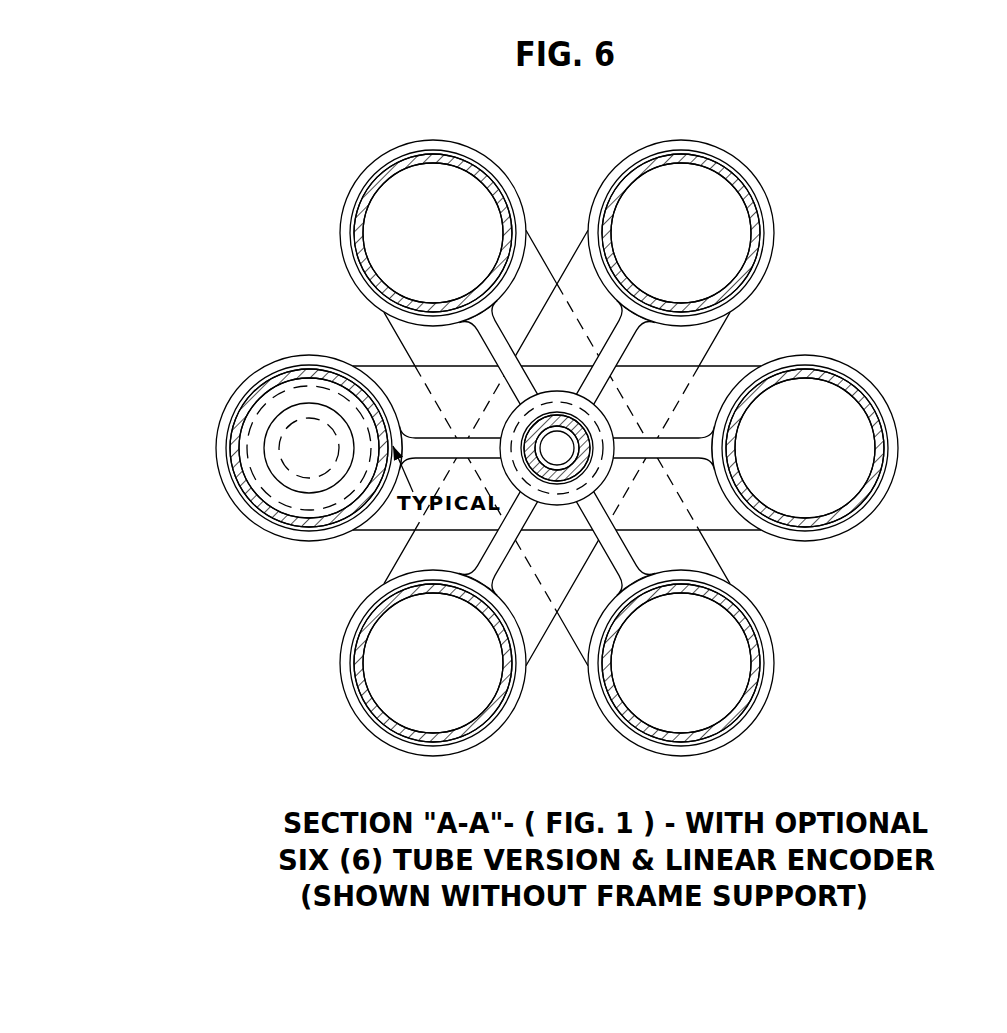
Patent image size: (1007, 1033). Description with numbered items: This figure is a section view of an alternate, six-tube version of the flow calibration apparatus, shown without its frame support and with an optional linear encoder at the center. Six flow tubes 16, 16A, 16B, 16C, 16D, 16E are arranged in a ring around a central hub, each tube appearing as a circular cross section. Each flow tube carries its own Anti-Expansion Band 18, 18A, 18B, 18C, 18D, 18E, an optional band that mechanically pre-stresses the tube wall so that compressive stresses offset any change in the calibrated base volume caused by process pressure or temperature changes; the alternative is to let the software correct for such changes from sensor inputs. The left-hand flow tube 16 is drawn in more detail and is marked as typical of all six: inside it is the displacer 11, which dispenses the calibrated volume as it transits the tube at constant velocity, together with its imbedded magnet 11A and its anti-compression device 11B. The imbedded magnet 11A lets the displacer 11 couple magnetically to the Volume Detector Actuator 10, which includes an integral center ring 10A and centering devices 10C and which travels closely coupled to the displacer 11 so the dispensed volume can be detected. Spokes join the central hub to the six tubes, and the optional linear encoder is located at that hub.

The Volume Detector Actuator 10 is at (399, 422).
The integral center ring 10A is at (419, 422).
The centering devices 10C is at (464, 422).
The displacer 11 is at (343, 489).
The imbedded magnet 11A is at (291, 470).
The anti-compression device 11B is at (280, 482).
The flow tube 16 is at (266, 388).
The flow tube 16A is at (848, 373).
The flow tube 16B is at (367, 196).
The flow tube 16C is at (749, 188).
The flow tube 16D is at (352, 636).
The flow tube 16E is at (765, 642).
The Anti-Expansion Band 18 is at (244, 390).
The Anti-Expansion Band 18A is at (886, 406).
The Anti-Expansion Band 18B is at (352, 233).
The Anti-Expansion Band 18C is at (765, 213).
The Anti-Expansion Band 18D is at (348, 690).
The Anti-Expansion Band 18E is at (774, 681).